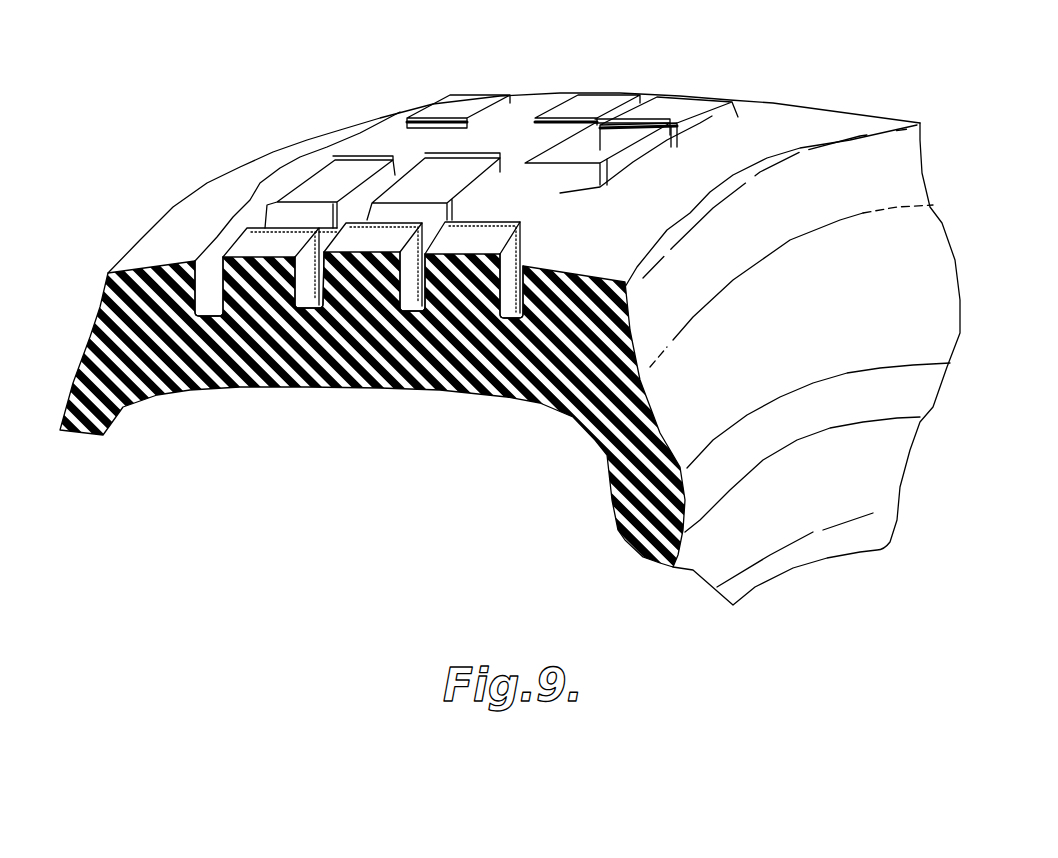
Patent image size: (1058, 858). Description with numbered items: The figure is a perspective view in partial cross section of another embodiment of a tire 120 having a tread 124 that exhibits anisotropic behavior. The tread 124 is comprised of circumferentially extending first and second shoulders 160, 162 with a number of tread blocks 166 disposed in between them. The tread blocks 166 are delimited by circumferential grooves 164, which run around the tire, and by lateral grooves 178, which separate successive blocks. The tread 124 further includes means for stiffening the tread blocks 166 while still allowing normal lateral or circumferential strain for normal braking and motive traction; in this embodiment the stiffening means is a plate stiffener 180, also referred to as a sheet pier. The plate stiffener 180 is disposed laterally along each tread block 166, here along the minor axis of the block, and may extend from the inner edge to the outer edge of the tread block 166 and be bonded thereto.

The tire 120 is at (98, 298).
The tread 124 is at (173, 197).
The first shoulder 160 is at (803, 117).
The second shoulder 162 is at (173, 232).
The circumferential grooves 164 is at (210, 320).
The tread blocks 166 is at (322, 187).
The lateral grooves 178 is at (352, 158).
The plate stiffener 180 is at (262, 227).